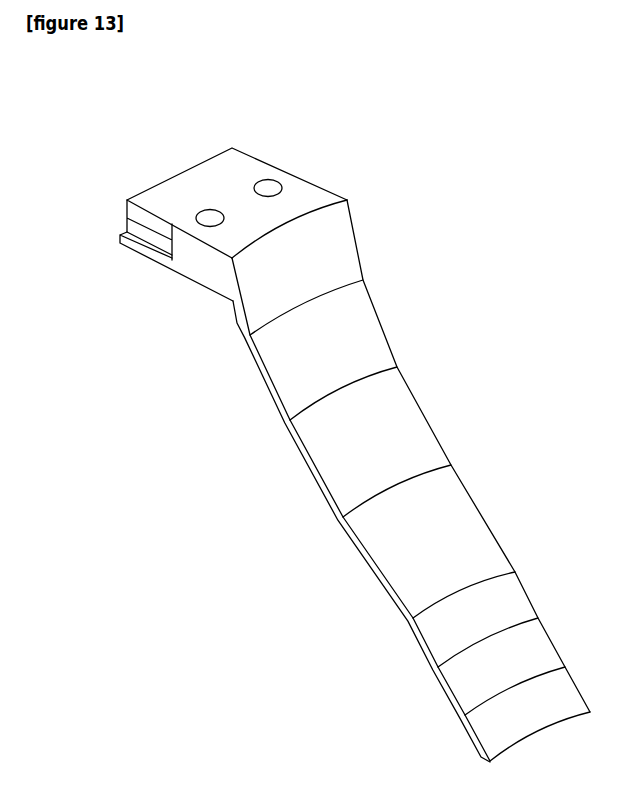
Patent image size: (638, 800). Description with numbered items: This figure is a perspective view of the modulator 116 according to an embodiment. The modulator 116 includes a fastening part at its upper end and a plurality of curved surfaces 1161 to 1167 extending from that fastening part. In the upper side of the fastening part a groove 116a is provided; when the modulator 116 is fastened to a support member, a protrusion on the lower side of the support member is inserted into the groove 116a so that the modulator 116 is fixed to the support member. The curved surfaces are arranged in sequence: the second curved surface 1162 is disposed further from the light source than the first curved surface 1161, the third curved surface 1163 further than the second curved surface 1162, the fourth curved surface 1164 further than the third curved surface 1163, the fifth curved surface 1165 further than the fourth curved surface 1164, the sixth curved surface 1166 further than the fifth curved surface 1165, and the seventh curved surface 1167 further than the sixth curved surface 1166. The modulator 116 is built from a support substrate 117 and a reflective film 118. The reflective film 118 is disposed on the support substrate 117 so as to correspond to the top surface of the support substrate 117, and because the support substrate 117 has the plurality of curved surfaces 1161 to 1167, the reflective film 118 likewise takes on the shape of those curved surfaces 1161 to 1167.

The modulator 116 is at (82, 131).
The groove 116a is at (276, 167).
The first curved surface 1161 is at (359, 250).
The second curved surface 1162 is at (386, 328).
The third curved surface 1163 is at (418, 408).
The fourth curved surface 1164 is at (484, 516).
The fifth curved surface 1165 is at (524, 595).
The sixth curved surface 1166 is at (455, 696).
The seventh curved surface 1167 is at (471, 743).
The support substrate 117 is at (307, 513).
The reflective film 118 is at (420, 447).